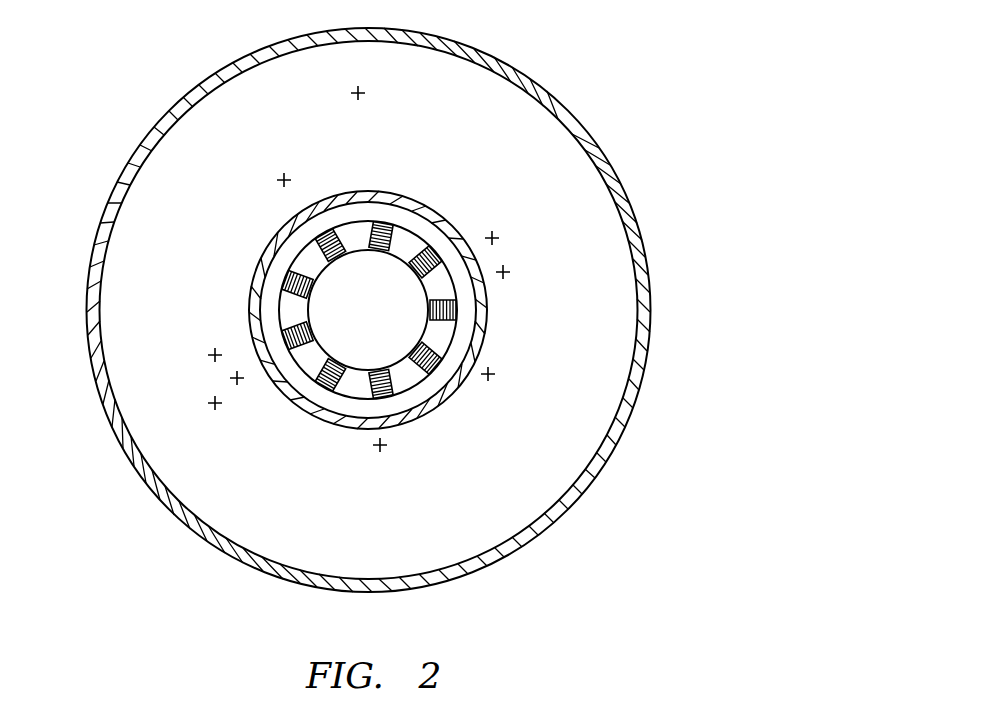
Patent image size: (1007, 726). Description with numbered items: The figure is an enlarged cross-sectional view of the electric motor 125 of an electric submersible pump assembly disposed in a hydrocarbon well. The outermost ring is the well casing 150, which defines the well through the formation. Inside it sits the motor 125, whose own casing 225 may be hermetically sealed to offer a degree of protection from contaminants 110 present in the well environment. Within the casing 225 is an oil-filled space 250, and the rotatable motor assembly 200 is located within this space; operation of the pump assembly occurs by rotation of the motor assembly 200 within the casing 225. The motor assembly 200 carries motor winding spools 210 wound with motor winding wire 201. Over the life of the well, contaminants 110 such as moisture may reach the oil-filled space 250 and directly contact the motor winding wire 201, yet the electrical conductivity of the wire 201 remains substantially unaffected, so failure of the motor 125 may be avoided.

The contaminants 110 is at (356, 91).
The motor 125 is at (247, 280).
The casing 150 is at (626, 212).
The motor assembly 200 is at (425, 242).
The motor winding wire 201 is at (443, 360).
The motor winding spools 210 is at (323, 253).
The casing 225 is at (455, 392).
The oil-filled space 250 is at (378, 405).